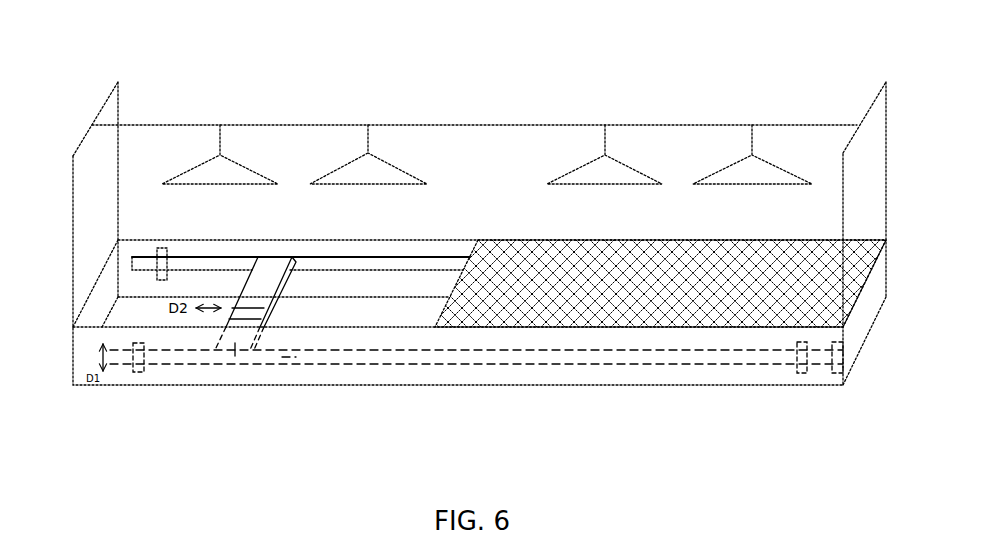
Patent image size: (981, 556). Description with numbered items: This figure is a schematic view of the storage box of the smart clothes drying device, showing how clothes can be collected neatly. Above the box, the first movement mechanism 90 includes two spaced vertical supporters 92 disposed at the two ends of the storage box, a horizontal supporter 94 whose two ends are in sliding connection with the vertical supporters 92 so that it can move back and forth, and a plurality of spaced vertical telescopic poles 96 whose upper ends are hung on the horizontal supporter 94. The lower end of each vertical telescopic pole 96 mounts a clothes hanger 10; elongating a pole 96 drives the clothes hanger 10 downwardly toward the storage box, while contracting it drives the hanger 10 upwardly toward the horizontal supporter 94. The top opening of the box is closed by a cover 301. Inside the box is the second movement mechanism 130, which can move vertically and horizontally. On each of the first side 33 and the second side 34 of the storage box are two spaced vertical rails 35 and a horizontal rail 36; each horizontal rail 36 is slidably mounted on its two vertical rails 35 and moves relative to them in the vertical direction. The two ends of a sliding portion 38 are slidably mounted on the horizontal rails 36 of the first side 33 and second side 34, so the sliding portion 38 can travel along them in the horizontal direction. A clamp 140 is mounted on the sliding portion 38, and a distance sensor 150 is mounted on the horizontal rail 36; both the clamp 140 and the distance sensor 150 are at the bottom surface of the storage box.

The clothes hanger 10 is at (614, 168).
The first side 33 is at (328, 250).
The second side 34 is at (713, 377).
The vertical rail 35 is at (140, 372).
The horizontal rail 36 is at (289, 360).
The sliding portion 38 is at (237, 345).
The first movement mechanism 90 is at (472, 98).
The vertical supporter 92 is at (100, 112).
The horizontal supporter 94 is at (162, 125).
The vertical telescopic pole 96 is at (220, 135).
The second movement mechanism 130 is at (225, 410).
The clamp 140 is at (257, 314).
The distance sensor 150 is at (835, 367).
The cover 301 is at (663, 240).